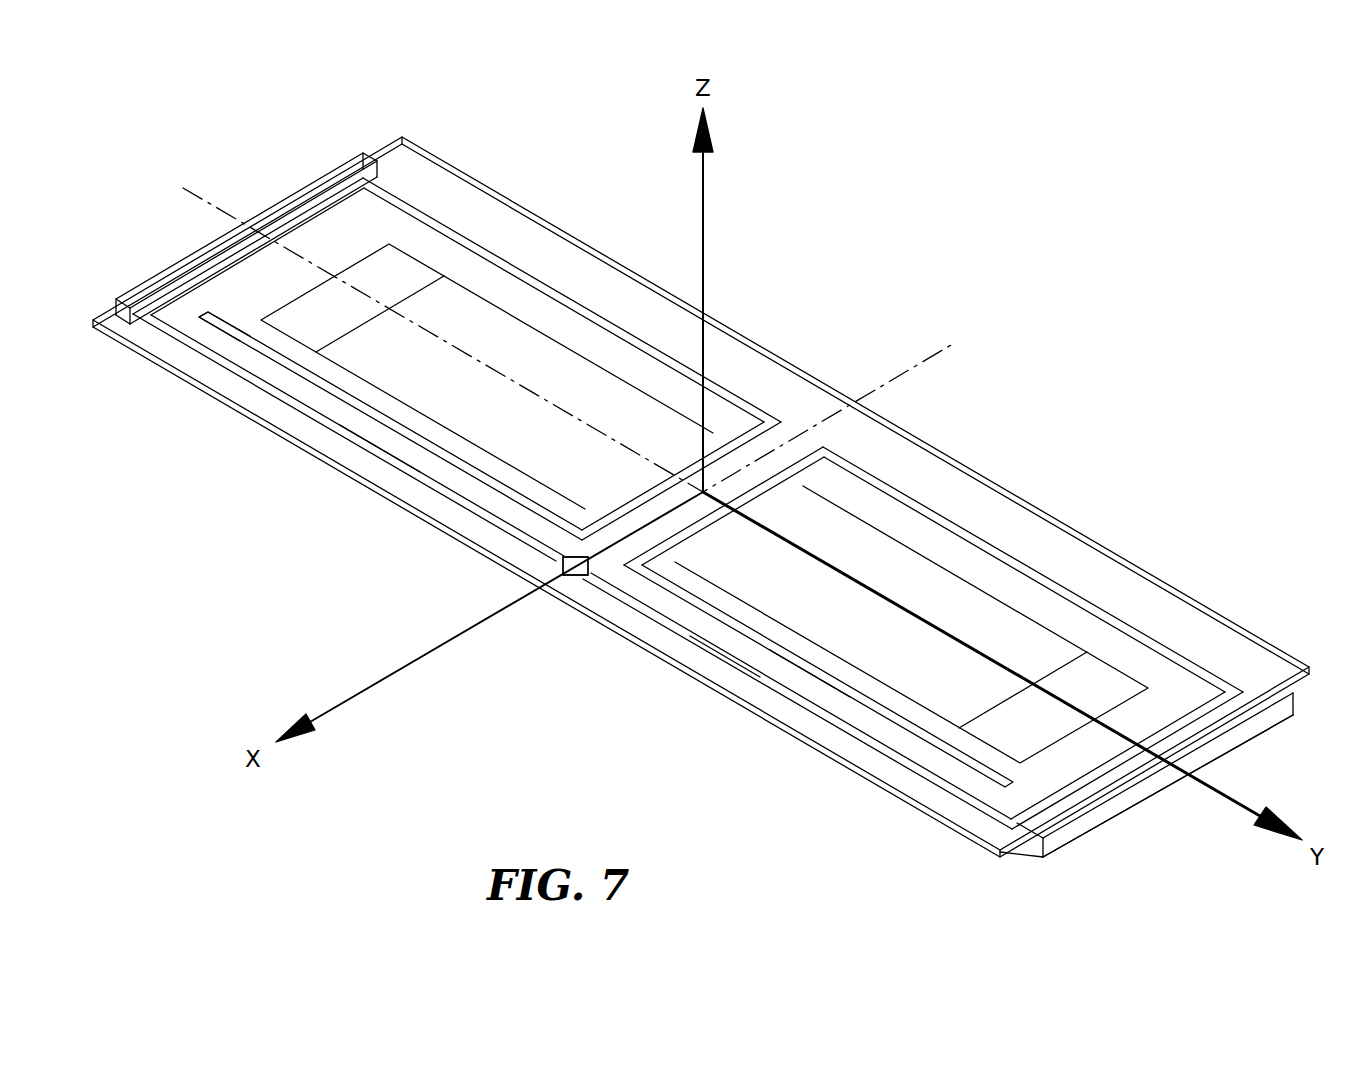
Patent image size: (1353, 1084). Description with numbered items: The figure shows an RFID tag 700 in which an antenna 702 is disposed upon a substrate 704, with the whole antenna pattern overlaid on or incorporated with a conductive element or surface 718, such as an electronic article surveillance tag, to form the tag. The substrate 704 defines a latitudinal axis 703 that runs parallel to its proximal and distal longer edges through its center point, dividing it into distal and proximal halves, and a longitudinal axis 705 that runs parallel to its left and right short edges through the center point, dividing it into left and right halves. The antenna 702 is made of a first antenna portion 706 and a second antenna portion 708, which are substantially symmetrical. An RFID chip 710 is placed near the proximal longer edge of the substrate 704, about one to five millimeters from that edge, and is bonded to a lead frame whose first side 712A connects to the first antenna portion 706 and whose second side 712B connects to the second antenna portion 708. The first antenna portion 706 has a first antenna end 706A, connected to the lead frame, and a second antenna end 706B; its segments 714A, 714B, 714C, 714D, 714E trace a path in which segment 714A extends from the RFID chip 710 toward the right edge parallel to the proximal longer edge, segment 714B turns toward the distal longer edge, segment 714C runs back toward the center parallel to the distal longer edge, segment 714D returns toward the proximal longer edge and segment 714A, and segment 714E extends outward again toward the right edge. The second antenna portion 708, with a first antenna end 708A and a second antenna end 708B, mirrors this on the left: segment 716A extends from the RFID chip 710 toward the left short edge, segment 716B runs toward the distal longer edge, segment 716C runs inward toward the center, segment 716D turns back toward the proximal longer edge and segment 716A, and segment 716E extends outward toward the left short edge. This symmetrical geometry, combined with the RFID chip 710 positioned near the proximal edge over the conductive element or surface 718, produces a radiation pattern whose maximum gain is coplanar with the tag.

The RFID tag 700 is at (1062, 300).
The antenna 702 is at (968, 907).
The latitudinal axis 703 is at (1237, 797).
The substrate 704 is at (1009, 852).
The longitudinal axis 705 is at (943, 350).
The first antenna portion 706 is at (948, 573).
The first antenna end 706A is at (722, 655).
The second antenna end 706B is at (808, 672).
The second antenna portion 708 is at (472, 326).
The first antenna end 708A is at (385, 452).
The second antenna end 708B is at (205, 315).
The RFID chip 710 is at (573, 575).
The first side of lead frame 712A is at (582, 578).
The second side of lead frame 712B is at (563, 560).
The segment 714A is at (885, 755).
The segment 714B is at (1183, 688).
The segment 714C is at (1157, 640).
The segment 714D is at (790, 467).
The segment 714E is at (965, 762).
The segment 716A is at (223, 367).
The segment 716B is at (180, 295).
The segment 716C is at (470, 245).
The segment 716D is at (728, 440).
The segment 716E is at (303, 377).
The conductive element or surface 718 is at (895, 565).